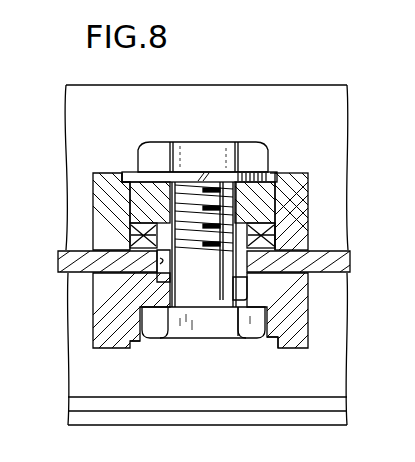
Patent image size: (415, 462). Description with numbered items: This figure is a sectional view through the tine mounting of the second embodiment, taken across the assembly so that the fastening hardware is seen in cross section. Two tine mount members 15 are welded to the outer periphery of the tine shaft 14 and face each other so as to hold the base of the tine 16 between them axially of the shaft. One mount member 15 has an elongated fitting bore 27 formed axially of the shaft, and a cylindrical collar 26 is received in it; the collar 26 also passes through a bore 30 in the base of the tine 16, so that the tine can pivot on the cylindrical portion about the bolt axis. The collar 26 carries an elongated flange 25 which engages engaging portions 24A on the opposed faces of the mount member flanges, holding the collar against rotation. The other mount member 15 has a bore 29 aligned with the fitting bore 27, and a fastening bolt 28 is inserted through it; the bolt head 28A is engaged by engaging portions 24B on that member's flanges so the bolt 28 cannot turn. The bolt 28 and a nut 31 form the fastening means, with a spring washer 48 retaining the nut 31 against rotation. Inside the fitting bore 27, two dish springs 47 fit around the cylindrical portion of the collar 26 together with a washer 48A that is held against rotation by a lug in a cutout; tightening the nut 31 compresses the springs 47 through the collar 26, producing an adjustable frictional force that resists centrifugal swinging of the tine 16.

The tine shaft 14 is at (222, 98).
The tine mount member 15 is at (102, 212).
The tine 16 is at (60, 261).
The engaging portion 24A is at (130, 178).
The engaging portion 24B is at (132, 343).
The flange 25 is at (158, 192).
The cylindrical collar 26 is at (285, 280).
The fitting bore 27 is at (296, 193).
The fastening bolt 28 is at (195, 290).
The bolt head 28A is at (225, 328).
The bore 29 is at (290, 338).
The bore 30 is at (150, 276).
The nut 31 is at (217, 147).
The dish spring 47 is at (297, 232).
The spring washer 48 is at (243, 172).
The washer 48A is at (272, 276).